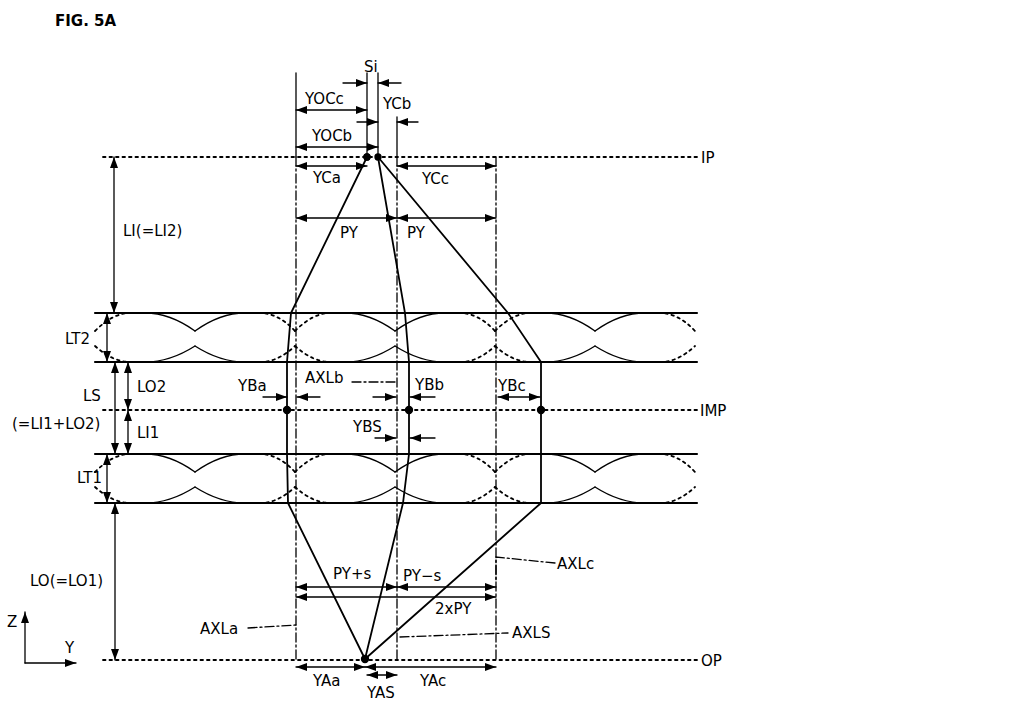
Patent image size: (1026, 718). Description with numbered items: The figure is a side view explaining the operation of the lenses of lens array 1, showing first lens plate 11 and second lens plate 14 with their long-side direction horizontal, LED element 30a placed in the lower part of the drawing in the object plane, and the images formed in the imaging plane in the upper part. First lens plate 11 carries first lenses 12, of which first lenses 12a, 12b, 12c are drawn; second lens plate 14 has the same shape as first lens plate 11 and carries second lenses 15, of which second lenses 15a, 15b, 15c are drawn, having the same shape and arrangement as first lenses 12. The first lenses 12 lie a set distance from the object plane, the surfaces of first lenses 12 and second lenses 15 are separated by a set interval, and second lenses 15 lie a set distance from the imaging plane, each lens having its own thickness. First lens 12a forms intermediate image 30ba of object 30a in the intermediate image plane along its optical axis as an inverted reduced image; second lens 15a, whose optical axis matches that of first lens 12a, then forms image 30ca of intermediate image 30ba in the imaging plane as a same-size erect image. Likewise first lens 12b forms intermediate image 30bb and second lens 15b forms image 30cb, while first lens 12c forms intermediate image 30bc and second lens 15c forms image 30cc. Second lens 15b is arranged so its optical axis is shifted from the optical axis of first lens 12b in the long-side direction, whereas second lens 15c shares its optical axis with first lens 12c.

The lens array 1 is at (737, 296).
The first lens plate 11 is at (697, 503).
The first lenses 12 is at (290, 566).
The first lens 12a is at (295, 503).
The first lens 12b is at (395, 503).
The first lens 12c is at (485, 503).
The second lens plate 14 is at (690, 313).
The second lenses 15 is at (607, 250).
The second lens 15a is at (312, 313).
The second lens 15b is at (418, 313).
The second lens 15c is at (503, 313).
The LED element 30a is at (362, 658).
The intermediate image 30ba is at (286, 412).
The intermediate image 30bb is at (411, 412).
The intermediate image 30bc is at (543, 412).
The image 30ca is at (366, 159).
The image 30cb is at (383, 155).
The image 30cc is at (301, 186).